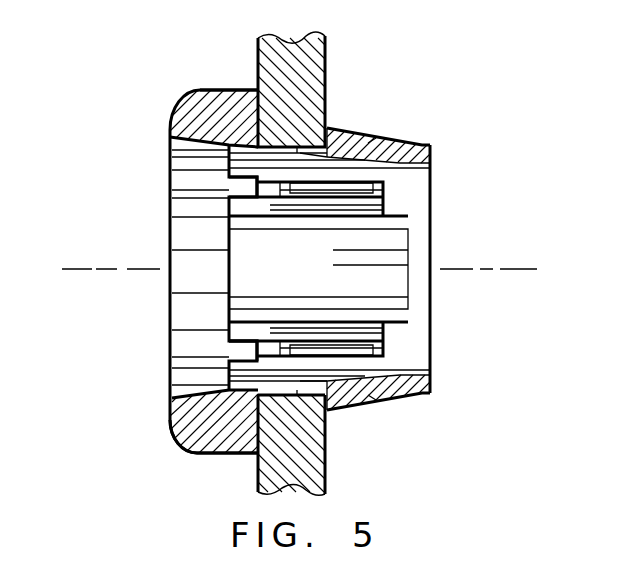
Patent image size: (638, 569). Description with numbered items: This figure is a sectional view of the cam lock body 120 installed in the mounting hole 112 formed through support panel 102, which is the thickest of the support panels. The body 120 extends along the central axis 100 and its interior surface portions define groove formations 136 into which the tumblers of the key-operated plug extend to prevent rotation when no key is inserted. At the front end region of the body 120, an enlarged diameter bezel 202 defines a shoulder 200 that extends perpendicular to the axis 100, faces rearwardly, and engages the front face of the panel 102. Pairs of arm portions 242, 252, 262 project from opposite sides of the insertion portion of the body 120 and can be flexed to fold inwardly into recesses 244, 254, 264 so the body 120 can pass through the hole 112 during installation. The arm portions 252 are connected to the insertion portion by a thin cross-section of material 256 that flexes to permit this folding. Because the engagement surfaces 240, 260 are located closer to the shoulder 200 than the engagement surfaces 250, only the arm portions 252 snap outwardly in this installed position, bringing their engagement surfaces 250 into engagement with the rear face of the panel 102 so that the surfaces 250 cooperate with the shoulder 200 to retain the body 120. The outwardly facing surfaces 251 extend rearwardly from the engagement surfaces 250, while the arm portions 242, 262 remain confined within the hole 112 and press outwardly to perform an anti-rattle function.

The central axis 100 is at (110, 269).
The support panel 102 is at (313, 64).
The mounting hole 112 is at (330, 153).
The body 120 is at (177, 93).
The groove formations 136 is at (384, 245).
The shoulder 200 is at (282, 100).
The bezel 202 is at (207, 440).
The engagement surfaces 240 is at (262, 207).
The arm portions 242 is at (320, 188).
The recesses 244 is at (247, 183).
The engagement surfaces 250 is at (298, 147).
The outwardly facing surfaces 251 is at (372, 140).
The arm portions 252 is at (368, 143).
The recesses 254 is at (384, 184).
The thin cross-section of material 256 is at (410, 151).
The engagement surfaces 260 is at (270, 356).
The arm portions 262 is at (308, 346).
The recesses 264 is at (262, 343).